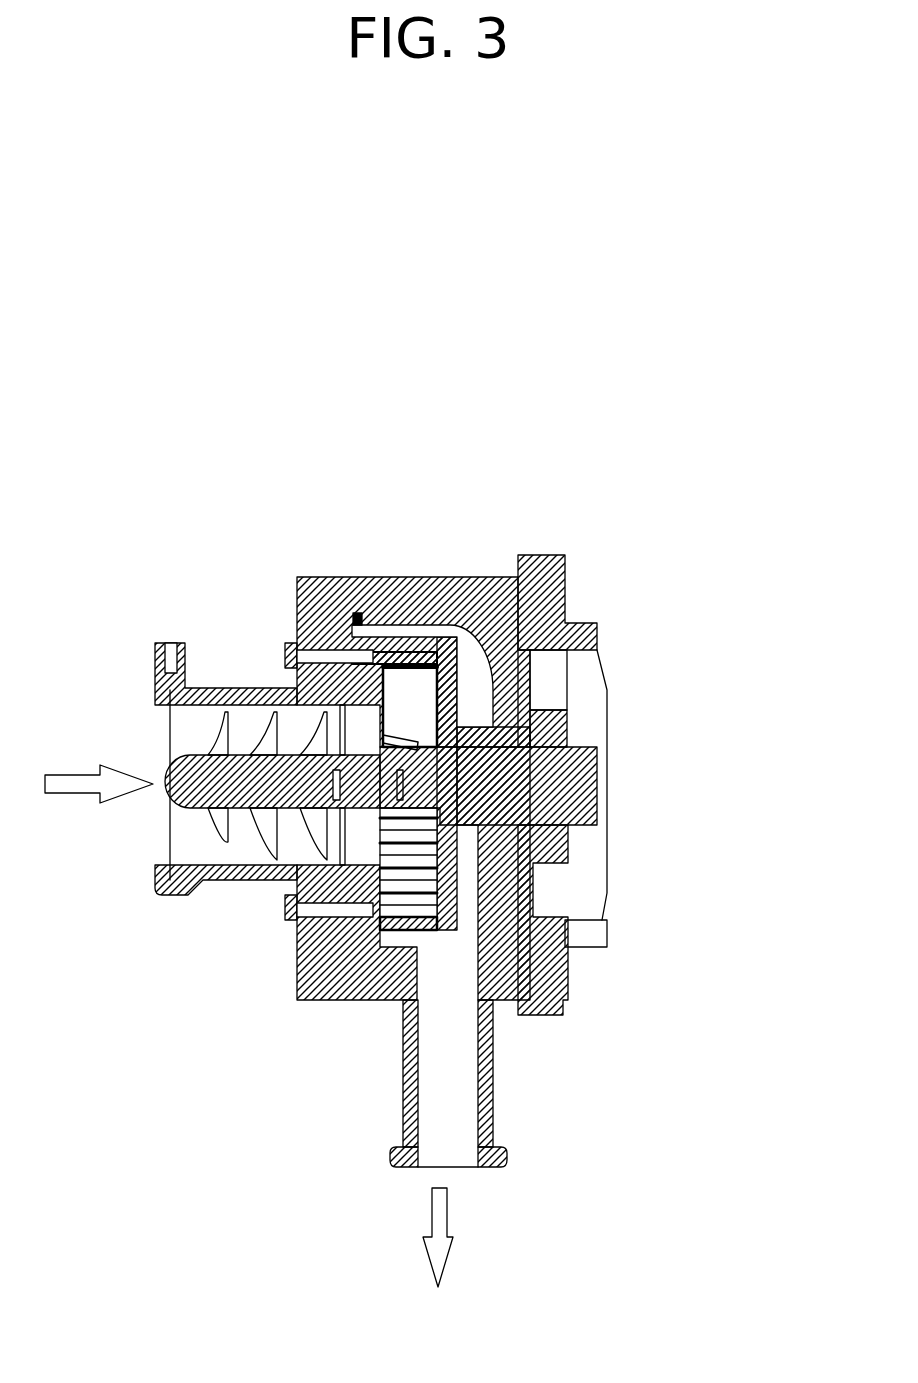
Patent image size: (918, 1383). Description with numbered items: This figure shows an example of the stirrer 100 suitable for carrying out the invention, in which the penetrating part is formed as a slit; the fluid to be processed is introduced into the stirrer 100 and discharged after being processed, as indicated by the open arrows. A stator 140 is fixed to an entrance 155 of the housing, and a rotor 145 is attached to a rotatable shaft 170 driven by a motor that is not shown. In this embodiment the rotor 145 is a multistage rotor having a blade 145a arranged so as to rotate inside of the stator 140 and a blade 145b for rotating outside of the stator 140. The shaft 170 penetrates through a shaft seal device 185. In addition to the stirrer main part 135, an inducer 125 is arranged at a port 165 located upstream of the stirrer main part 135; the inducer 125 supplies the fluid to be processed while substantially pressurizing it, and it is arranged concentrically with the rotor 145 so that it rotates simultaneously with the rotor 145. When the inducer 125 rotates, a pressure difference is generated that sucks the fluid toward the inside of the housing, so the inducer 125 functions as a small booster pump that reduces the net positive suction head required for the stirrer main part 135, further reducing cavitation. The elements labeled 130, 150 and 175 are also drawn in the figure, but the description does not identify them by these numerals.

The stirrer 100 is at (652, 520).
The inducer 125 is at (303, 762).
The outlet pipe 130 is at (378, 1000).
The stirrer main part 135 is at (398, 652).
The stator 140 is at (487, 1150).
The rotor 145 is at (418, 655).
The blade 145a is at (390, 752).
The blade 145b is at (415, 915).
The housing 150 is at (312, 572).
The entrance 155 is at (300, 965).
The port 165 is at (228, 692).
The shaft 170 is at (528, 850).
The end plate 175 is at (340, 900).
The shaft seal device 185 is at (547, 722).